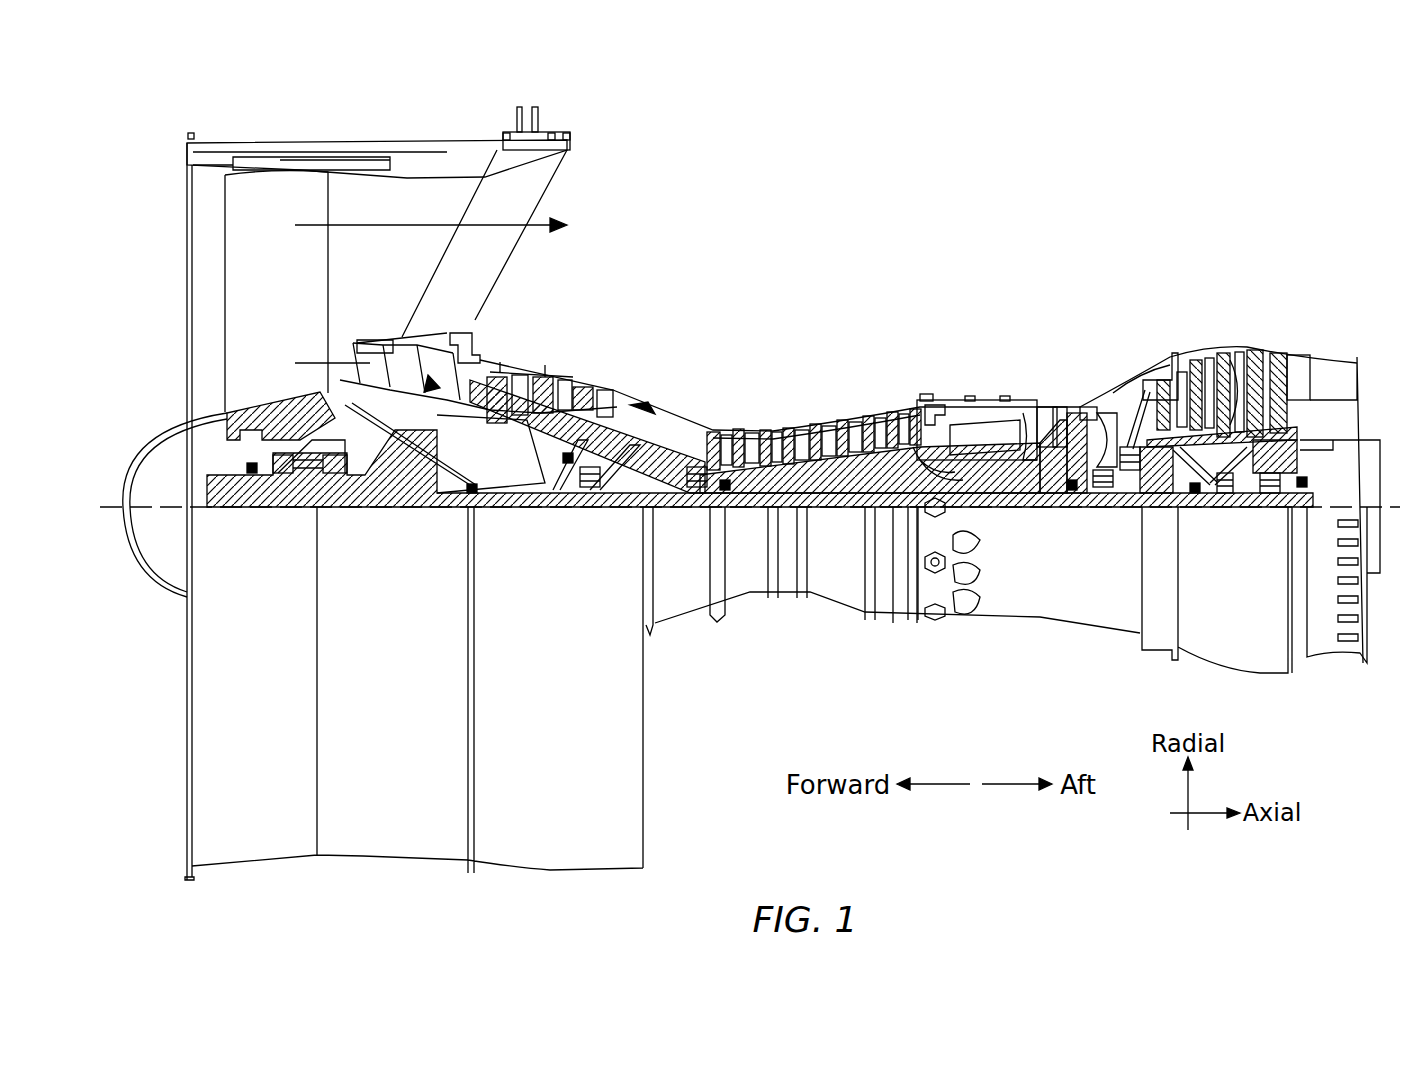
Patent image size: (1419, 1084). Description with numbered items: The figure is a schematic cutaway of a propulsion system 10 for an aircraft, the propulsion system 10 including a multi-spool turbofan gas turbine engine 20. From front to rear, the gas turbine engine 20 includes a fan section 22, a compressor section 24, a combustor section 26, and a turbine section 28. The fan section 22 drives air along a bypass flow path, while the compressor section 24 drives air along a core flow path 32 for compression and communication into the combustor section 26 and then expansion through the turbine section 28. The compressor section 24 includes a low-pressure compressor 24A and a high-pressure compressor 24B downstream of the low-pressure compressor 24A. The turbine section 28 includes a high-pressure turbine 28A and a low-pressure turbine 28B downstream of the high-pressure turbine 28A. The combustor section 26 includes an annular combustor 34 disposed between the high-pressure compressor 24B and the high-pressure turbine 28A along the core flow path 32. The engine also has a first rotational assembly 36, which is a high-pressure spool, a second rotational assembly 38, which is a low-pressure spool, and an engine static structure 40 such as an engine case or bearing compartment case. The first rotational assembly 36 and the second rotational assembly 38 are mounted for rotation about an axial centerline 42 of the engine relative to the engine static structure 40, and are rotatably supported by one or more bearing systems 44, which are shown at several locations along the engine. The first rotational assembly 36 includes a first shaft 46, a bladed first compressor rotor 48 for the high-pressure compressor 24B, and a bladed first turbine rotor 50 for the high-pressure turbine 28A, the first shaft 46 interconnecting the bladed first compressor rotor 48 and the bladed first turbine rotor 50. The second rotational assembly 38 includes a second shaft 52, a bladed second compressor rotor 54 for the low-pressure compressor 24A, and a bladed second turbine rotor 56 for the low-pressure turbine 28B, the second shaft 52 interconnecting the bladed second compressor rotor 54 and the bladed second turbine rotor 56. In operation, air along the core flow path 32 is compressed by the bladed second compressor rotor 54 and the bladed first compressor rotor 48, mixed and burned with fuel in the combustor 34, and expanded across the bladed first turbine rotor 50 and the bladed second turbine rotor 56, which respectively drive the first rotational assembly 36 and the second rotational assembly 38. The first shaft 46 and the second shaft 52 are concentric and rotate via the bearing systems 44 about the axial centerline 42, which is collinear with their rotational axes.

The propulsion system 10 is at (1218, 206).
The gas turbine engine 20 is at (547, 213).
The fan section 22 is at (465, 112).
The compressor section 24 is at (478, 272).
The low-pressure compressor 24A is at (549, 353).
The high-pressure compressor 24B is at (773, 416).
The combustor section 26 is at (925, 272).
The turbine section 28 is at (1300, 272).
The high-pressure turbine 28A is at (1069, 388).
The low-pressure turbine 28B is at (1205, 356).
The core flow path 32 is at (650, 398).
The annular combustor 34 is at (981, 428).
The first rotational assembly 36 is at (853, 474).
The second rotational assembly 38 is at (1127, 508).
The engine static structure 40 is at (1108, 395).
The axial centerline 42 is at (222, 510).
The bearing systems 44 is at (333, 508).
The first shaft 46 is at (962, 483).
The bladed first compressor rotor 48 is at (808, 432).
The bladed first turbine rotor 50 is at (1047, 455).
The second shaft 52 is at (1033, 500).
The bladed second compressor rotor 54 is at (541, 383).
The bladed second turbine rotor 56 is at (1225, 398).